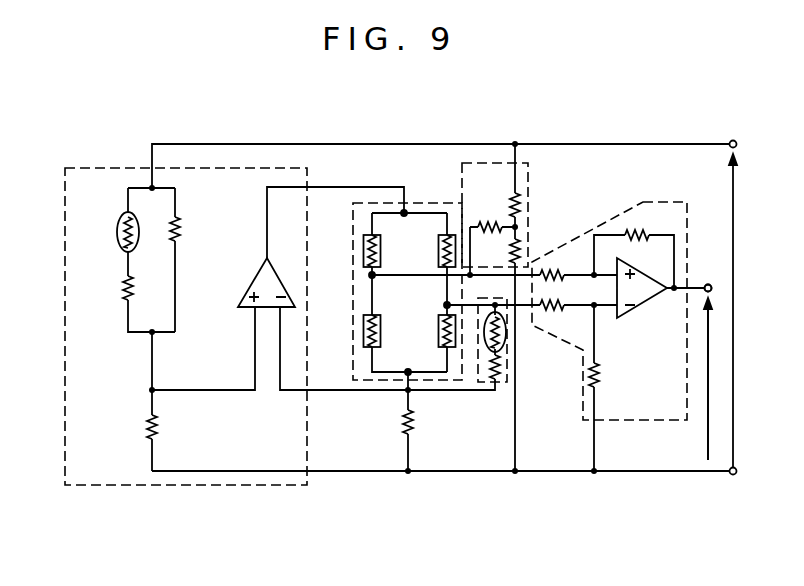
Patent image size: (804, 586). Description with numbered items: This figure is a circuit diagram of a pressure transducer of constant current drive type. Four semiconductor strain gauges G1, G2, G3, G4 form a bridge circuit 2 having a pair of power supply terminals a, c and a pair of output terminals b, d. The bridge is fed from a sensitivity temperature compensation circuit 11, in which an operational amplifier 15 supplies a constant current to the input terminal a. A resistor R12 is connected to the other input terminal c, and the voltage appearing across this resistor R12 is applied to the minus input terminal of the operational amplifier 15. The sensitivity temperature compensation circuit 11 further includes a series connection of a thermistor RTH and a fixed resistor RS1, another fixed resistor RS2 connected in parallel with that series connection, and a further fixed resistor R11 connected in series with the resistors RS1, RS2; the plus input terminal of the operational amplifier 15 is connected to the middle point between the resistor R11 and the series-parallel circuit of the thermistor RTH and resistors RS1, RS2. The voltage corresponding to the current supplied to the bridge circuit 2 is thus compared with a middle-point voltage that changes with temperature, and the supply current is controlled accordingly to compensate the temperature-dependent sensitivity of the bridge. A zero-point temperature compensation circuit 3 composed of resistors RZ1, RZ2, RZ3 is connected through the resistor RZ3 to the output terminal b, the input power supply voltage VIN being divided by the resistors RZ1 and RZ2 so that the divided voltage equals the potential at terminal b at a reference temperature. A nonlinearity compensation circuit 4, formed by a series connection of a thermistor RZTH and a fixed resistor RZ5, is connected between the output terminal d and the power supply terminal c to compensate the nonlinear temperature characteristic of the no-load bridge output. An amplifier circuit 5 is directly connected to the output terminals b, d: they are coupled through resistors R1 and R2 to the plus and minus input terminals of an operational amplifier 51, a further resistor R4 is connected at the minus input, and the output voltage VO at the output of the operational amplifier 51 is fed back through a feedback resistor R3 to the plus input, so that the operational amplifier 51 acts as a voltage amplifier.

The sensitivity temperature compensation circuit 11 is at (104, 168).
The bridge circuit 2 is at (427, 203).
The zero-point temperature compensation circuit 3 is at (485, 163).
The nonlinearity compensation circuit 4 is at (483, 382).
The amplifier circuit 5 is at (646, 202).
The operational amplifier 15 is at (254, 286).
The operational amplifier 51 is at (640, 302).
The power supply terminal a is at (404, 214).
The output terminal b is at (373, 276).
The power supply terminal c is at (408, 371).
The output terminal d is at (444, 303).
The thermistor RTH is at (119, 223).
The fixed resistor RS1 is at (124, 294).
The fixed resistor RS2 is at (182, 232).
The fixed resistor R11 is at (160, 428).
The resistor R12 is at (416, 424).
The semiconductor strain gauge G1 is at (363, 246).
The semiconductor strain gauge G2 is at (363, 332).
The semiconductor strain gauge G3 is at (438, 333).
The semiconductor strain gauge G4 is at (438, 257).
The resistor RZ1 is at (522, 205).
The resistor RZ2 is at (522, 244).
The resistor RZ3 is at (487, 222).
The fixed resistor RZ5 is at (500, 368).
The thermistor RZTH is at (505, 333).
The resistor R1 is at (554, 272).
The resistor R2 is at (551, 310).
The feedback resistor R3 is at (637, 234).
The resistor R4 is at (601, 378).
The input power supply voltage VIN is at (730, 289).
The output voltage VO is at (725, 384).